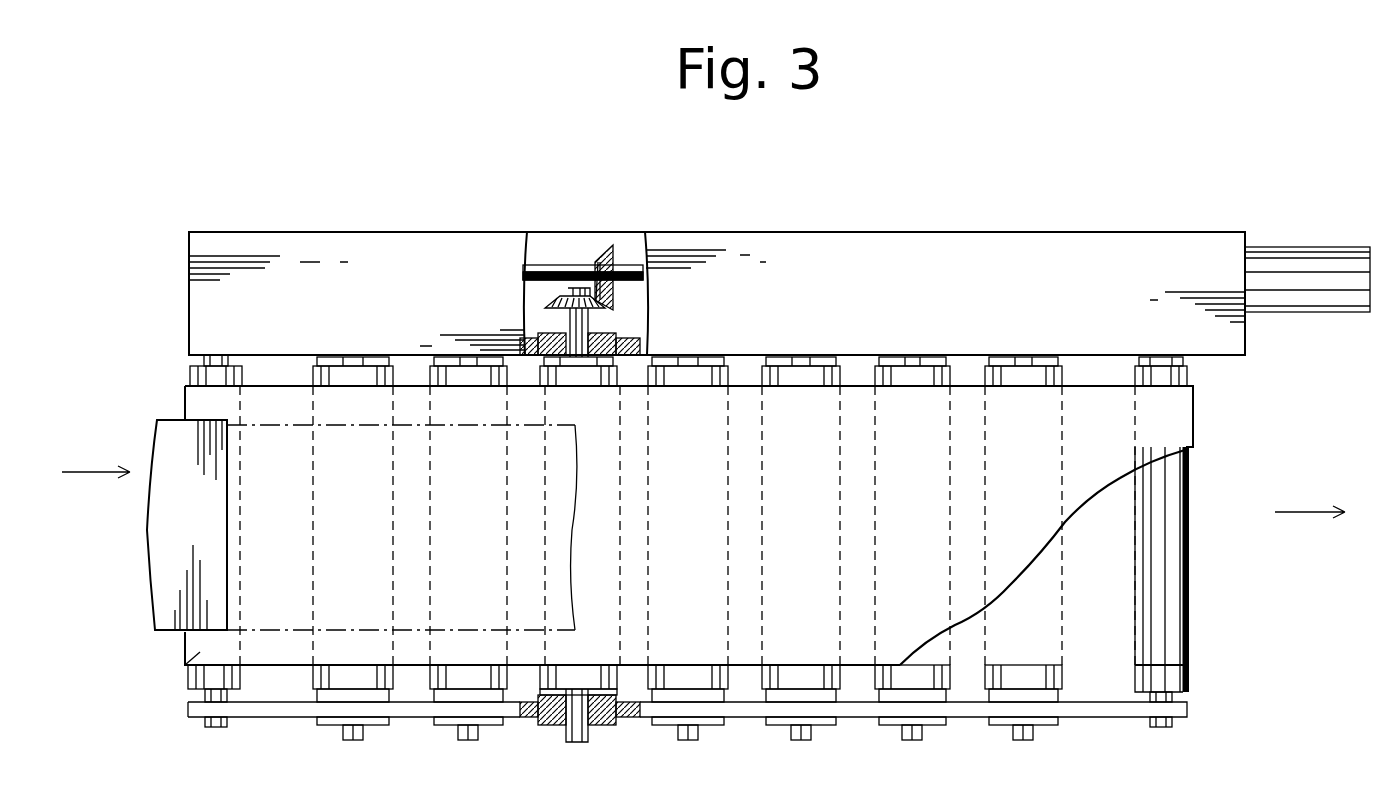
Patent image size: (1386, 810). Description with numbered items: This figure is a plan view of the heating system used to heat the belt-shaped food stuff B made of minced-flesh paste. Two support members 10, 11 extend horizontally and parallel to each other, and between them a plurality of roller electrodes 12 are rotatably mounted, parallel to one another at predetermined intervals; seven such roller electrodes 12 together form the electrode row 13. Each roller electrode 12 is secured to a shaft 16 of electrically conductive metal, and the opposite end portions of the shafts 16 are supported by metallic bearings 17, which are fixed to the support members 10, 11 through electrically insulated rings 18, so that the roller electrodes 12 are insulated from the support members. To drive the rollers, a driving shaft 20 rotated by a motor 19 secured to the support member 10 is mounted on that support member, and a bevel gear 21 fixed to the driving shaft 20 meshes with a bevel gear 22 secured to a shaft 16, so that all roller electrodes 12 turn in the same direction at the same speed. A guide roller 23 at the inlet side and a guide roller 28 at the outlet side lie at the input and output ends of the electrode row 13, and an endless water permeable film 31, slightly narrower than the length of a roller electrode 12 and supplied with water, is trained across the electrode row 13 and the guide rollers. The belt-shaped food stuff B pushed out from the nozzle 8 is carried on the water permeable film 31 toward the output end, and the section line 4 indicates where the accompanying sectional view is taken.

The push-out nozzle 8 is at (165, 633).
The support member 10 is at (1080, 247).
The support member 11 is at (855, 717).
The roller electrode 12 is at (895, 375).
The electrode row 13 is at (1215, 644).
The shaft 16 is at (465, 740).
The bearing 17 is at (545, 343).
The electrically insulated ring 18 is at (612, 343).
The motor 19 is at (1308, 300).
The driving shaft 20 is at (560, 263).
The bevel gear 21 is at (601, 282).
The bevel gear 22 is at (560, 300).
The guide roller 23 is at (192, 660).
The guide roller 28 is at (1183, 670).
The water permeable film 31 is at (1188, 467).
The strip cutting process 4 is at (105, 570).
The belt-shaped food stuff B is at (290, 632).